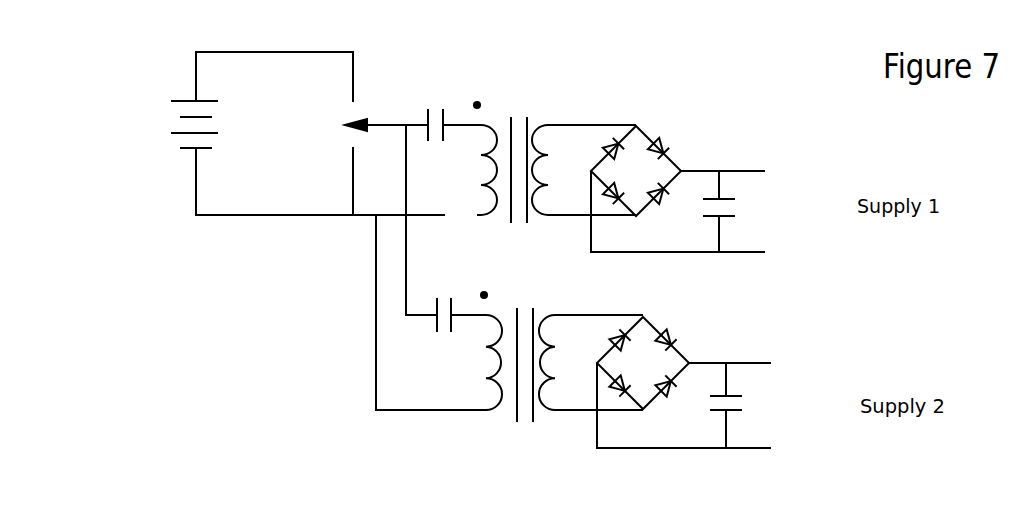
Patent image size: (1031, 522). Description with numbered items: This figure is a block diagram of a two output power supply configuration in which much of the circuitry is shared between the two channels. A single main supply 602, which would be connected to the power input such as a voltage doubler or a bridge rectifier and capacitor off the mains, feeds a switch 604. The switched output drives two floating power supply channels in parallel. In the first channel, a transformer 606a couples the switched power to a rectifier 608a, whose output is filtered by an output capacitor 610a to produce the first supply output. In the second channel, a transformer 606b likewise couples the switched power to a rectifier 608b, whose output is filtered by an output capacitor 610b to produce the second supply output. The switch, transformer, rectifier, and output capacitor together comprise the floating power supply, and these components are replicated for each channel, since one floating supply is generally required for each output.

The main supply 602 is at (163, 127).
The switch 604 is at (376, 118).
The transformer 606a is at (554, 146).
The transformer 606b is at (561, 378).
The rectifier 608a is at (678, 179).
The rectifier 608b is at (684, 382).
The output capacitor 610a is at (758, 211).
The output capacitor 610b is at (763, 405).